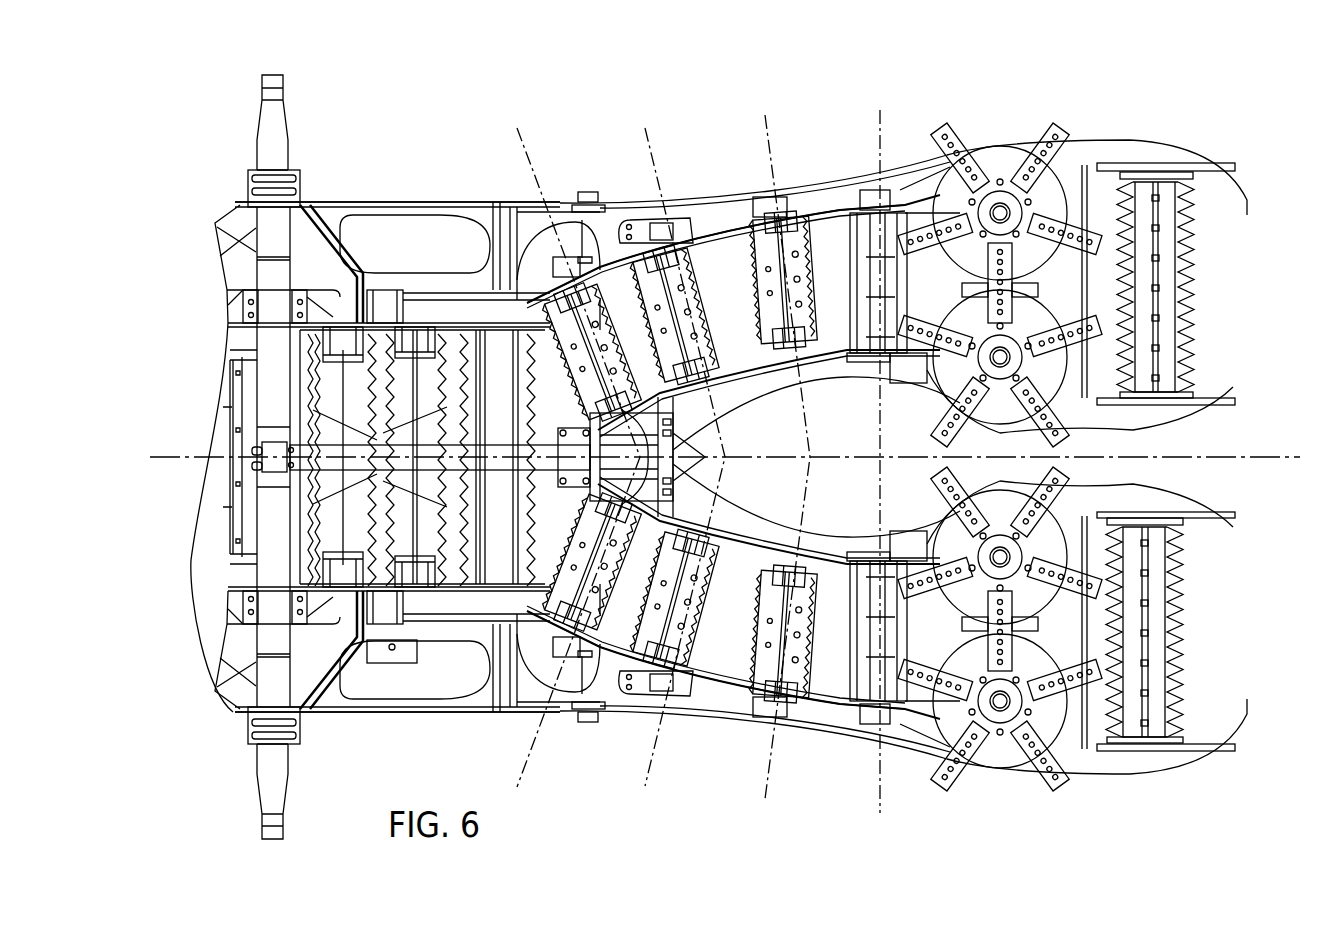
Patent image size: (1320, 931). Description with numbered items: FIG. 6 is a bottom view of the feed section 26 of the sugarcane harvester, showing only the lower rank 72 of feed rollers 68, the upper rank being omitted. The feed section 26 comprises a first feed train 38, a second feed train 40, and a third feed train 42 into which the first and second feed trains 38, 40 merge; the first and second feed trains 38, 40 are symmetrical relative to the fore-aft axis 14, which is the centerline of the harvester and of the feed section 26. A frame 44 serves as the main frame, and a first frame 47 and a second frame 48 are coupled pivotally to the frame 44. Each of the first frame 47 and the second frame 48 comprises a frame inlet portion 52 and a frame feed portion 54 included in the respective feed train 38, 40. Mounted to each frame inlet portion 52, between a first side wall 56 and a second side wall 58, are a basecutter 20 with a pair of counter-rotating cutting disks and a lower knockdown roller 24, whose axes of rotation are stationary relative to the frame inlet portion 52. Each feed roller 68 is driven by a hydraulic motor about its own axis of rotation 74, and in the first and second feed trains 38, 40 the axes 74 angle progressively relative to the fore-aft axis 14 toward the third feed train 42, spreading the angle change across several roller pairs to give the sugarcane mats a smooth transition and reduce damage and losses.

The fore-aft axis 14 is at (1288, 455).
The basecutter 20 is at (1002, 122).
The lower knockdown roller 24 is at (1170, 243).
The feed section 26 is at (628, 94).
The first feed train 38 is at (802, 177).
The second feed train 40 is at (820, 798).
The third feed train 42 is at (372, 187).
The frame 44 is at (463, 213).
The first frame 47 is at (698, 213).
The second frame 48 is at (698, 701).
The frame inlet portion 52 is at (1157, 427).
The frame feed portion 54 is at (835, 368).
The first side wall 56 is at (1210, 390).
The second side wall 58 is at (1212, 177).
The feed roller 68 is at (497, 323).
The lower rank 72 is at (900, 167).
The axis of rotation 74 is at (708, 454).